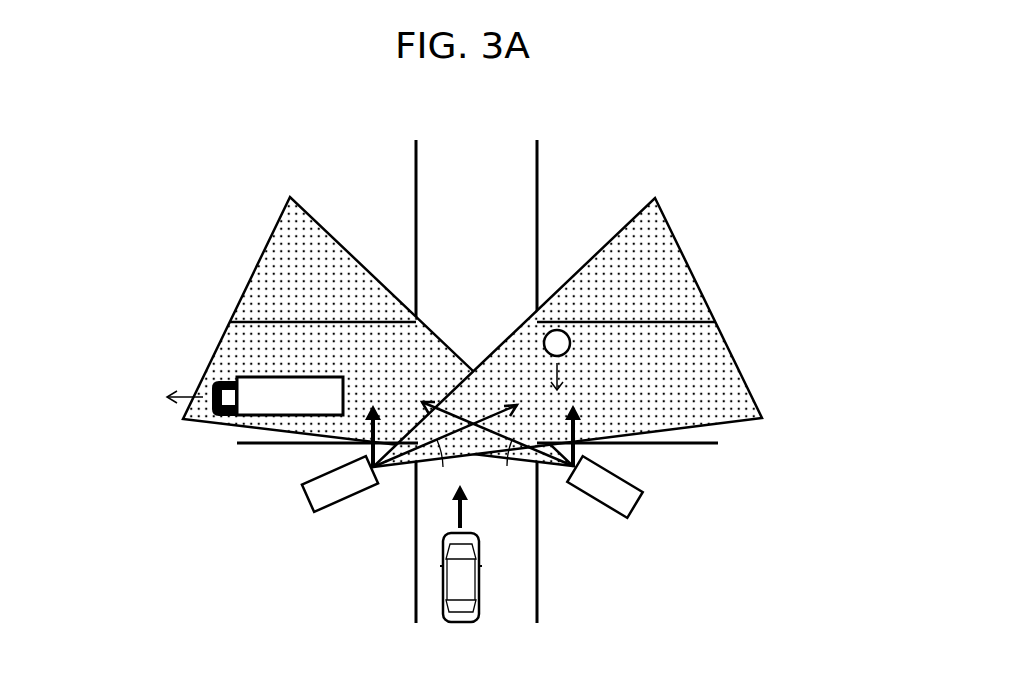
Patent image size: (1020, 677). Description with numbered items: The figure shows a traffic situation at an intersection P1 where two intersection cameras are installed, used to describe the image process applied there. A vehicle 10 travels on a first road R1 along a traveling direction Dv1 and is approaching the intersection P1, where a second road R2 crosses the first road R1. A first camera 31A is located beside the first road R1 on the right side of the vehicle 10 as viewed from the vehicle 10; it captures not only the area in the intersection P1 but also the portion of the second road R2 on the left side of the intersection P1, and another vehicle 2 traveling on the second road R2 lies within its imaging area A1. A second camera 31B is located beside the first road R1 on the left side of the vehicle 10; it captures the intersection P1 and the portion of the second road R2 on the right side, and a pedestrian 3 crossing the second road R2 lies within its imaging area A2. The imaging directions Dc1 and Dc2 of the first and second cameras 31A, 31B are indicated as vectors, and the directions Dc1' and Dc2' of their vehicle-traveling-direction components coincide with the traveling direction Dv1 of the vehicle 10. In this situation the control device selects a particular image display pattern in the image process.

The imaging area A1 is at (273, 230).
The imaging area A2 is at (667, 217).
The first road R1 is at (518, 165).
The second road R2 is at (278, 323).
The intersection P1 is at (472, 350).
The another vehicle 2 is at (320, 377).
The pedestrian 3 is at (563, 330).
The first camera 31A is at (637, 505).
The second camera 31B is at (303, 497).
The imaging direction Dc1 is at (510, 468).
The imaging direction Dc2 is at (438, 463).
The direction of vehicle-traveling-direction component Dc1' is at (727, 457).
The direction of vehicle-traveling-direction component Dc2' is at (218, 458).
The traveling direction Dv1 is at (455, 515).
The vehicle 10 is at (443, 578).